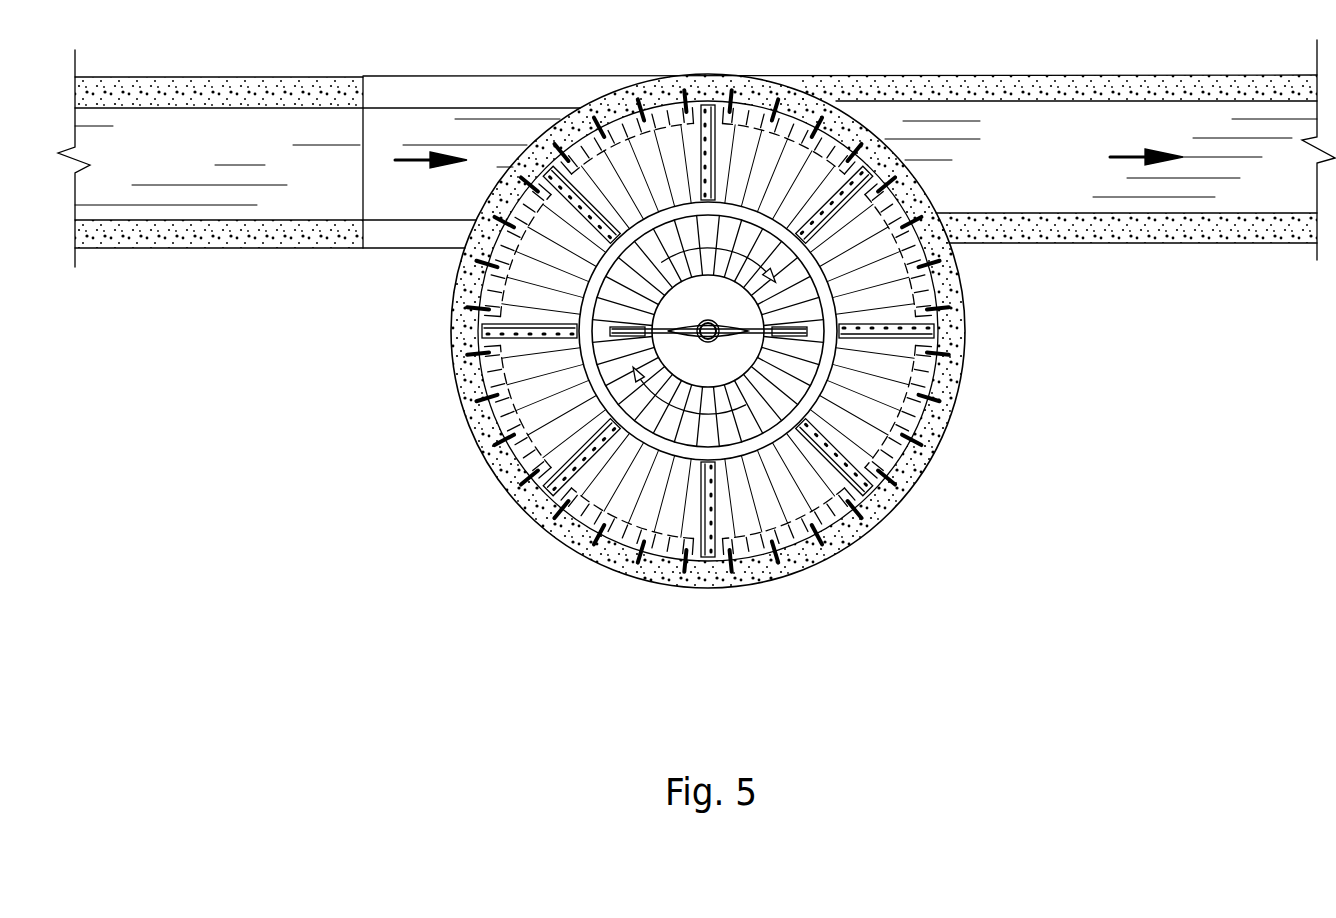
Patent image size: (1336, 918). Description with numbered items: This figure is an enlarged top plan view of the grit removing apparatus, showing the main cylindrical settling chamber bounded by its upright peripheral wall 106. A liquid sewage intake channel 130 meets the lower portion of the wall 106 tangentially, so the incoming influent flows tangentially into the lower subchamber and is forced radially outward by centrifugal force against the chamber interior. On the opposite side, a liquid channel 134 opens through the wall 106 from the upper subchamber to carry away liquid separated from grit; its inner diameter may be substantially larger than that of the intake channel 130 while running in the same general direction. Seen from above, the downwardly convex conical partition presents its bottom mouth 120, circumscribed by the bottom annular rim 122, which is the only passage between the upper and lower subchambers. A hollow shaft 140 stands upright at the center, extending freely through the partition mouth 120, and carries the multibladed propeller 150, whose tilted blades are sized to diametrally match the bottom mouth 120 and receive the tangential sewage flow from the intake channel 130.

The upright peripheral wall 106 is at (510, 468).
The bottom mouth 120 is at (666, 438).
The bottom annular rim 122 is at (887, 487).
The liquid sewage intake channel 130 is at (140, 239).
The liquid channel 134 is at (1195, 243).
The hollow shaft 140 is at (708, 345).
The multibladed propeller 150 is at (774, 352).